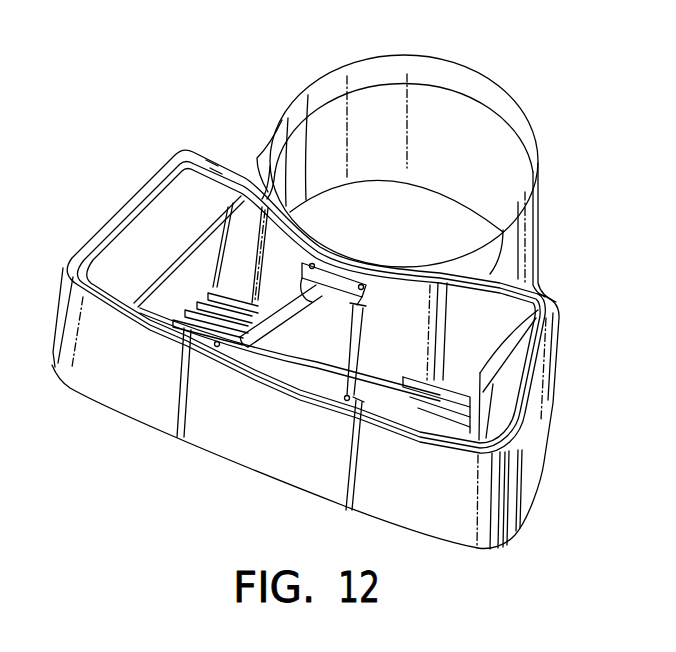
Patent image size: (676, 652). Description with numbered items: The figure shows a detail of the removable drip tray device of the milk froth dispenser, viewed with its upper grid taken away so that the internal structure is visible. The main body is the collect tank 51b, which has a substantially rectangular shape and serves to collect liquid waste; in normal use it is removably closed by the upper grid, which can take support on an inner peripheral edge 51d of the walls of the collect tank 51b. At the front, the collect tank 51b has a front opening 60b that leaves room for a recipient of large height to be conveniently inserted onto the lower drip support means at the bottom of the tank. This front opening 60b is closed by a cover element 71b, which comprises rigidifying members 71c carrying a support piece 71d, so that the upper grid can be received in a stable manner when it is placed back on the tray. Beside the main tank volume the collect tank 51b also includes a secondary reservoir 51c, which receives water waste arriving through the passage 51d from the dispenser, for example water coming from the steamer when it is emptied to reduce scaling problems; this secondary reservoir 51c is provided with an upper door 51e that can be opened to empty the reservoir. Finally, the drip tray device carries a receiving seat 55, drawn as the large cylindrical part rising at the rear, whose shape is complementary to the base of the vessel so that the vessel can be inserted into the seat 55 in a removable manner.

The receiving seat 55 is at (503, 88).
The secondary reservoir 51c is at (130, 185).
The upper door 51e is at (177, 213).
The inner peripheral edge 51d is at (214, 165).
The support piece 71d is at (333, 278).
The rigidifying members 71c is at (364, 348).
The collect tank 51b is at (447, 395).
The front opening 60b is at (178, 393).
The cover element 71b is at (243, 438).